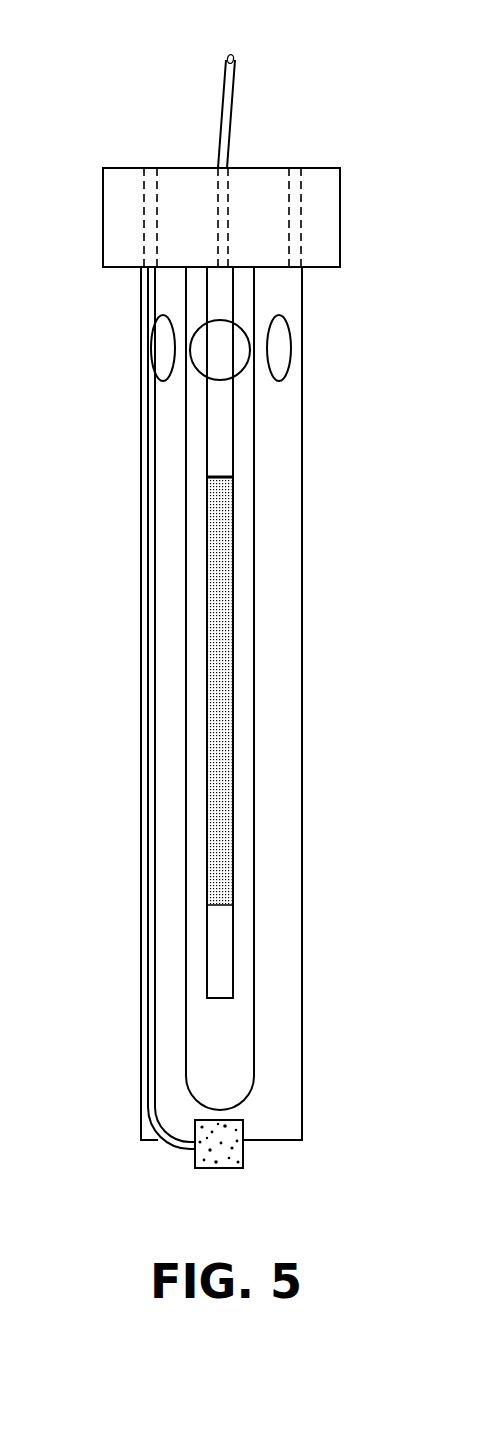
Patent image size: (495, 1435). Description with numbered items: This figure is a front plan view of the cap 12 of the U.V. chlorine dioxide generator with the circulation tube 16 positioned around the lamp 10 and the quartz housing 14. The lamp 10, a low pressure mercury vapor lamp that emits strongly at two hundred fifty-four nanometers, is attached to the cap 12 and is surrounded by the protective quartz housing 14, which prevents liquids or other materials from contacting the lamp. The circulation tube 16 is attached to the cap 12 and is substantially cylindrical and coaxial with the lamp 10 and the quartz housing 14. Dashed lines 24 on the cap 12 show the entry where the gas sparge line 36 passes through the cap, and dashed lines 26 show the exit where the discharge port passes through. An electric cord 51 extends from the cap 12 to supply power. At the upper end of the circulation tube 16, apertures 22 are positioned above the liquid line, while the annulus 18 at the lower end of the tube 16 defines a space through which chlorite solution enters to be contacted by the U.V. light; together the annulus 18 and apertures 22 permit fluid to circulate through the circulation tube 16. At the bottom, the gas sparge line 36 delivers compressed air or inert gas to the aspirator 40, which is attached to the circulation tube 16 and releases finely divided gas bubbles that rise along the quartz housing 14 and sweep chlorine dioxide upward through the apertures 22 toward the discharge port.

The lamp 10 is at (212, 562).
The cap 12 is at (333, 213).
The quartz housing 14 is at (185, 448).
The circulation tube 16 is at (147, 712).
The annulus 18 is at (157, 1143).
The apertures 22 is at (155, 350).
The dashed lines 24 is at (152, 167).
The dashed lines 26 is at (295, 167).
The gas sparge line 36 is at (183, 1150).
The aspirator 40 is at (247, 1152).
The electric cord 51 is at (220, 88).